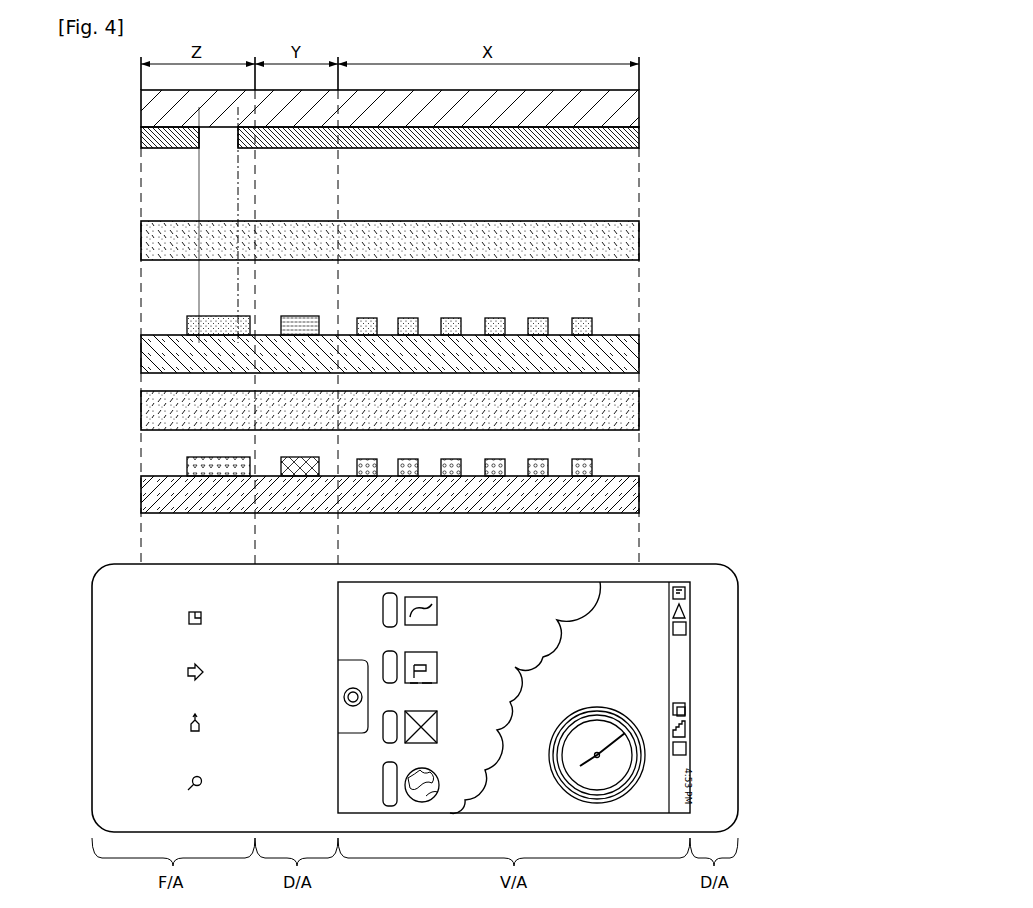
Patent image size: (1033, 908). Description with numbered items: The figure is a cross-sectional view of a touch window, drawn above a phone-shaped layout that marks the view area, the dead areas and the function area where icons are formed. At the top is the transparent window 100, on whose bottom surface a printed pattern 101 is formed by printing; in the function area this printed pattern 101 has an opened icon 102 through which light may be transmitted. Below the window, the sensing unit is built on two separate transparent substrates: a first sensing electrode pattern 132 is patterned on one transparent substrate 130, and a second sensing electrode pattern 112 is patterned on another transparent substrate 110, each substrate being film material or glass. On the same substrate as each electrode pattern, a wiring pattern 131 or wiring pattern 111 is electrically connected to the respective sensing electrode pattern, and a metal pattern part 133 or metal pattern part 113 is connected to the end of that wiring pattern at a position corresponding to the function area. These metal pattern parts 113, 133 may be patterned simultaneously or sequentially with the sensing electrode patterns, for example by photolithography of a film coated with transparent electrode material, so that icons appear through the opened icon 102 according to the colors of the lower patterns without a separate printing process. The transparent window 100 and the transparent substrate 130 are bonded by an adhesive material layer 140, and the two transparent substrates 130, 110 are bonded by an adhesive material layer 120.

The transparent window 100 is at (628, 112).
The printed pattern 101 is at (636, 139).
The icon 102 is at (218, 150).
The adhesive material layer 140 is at (640, 240).
The transparent substrate 130 is at (630, 352).
The wiring pattern 131 is at (300, 316).
The first sensing electrode pattern 132 is at (598, 318).
The metal pattern part 133 is at (185, 321).
The adhesive material layer 120 is at (636, 410).
The transparent substrate 110 is at (632, 492).
The wiring pattern 111 is at (300, 457).
The second sensing electrode pattern 112 is at (598, 460).
The metal pattern part 113 is at (185, 462).